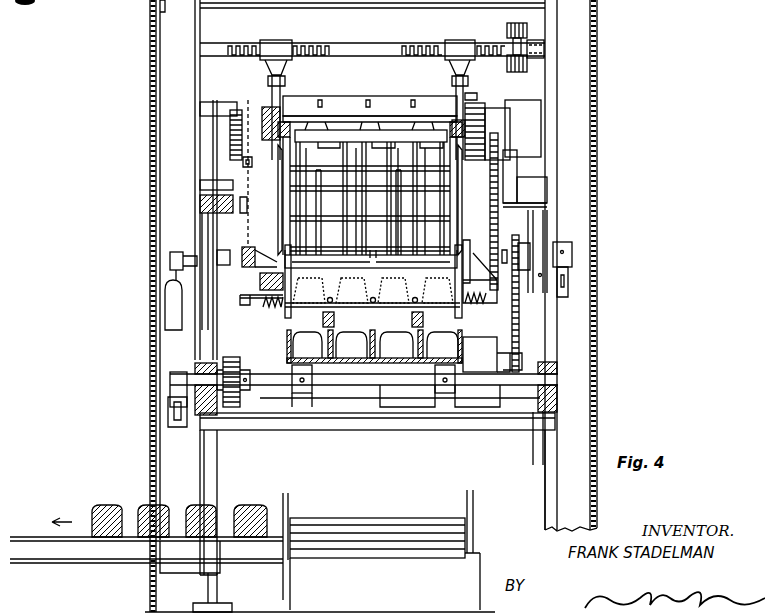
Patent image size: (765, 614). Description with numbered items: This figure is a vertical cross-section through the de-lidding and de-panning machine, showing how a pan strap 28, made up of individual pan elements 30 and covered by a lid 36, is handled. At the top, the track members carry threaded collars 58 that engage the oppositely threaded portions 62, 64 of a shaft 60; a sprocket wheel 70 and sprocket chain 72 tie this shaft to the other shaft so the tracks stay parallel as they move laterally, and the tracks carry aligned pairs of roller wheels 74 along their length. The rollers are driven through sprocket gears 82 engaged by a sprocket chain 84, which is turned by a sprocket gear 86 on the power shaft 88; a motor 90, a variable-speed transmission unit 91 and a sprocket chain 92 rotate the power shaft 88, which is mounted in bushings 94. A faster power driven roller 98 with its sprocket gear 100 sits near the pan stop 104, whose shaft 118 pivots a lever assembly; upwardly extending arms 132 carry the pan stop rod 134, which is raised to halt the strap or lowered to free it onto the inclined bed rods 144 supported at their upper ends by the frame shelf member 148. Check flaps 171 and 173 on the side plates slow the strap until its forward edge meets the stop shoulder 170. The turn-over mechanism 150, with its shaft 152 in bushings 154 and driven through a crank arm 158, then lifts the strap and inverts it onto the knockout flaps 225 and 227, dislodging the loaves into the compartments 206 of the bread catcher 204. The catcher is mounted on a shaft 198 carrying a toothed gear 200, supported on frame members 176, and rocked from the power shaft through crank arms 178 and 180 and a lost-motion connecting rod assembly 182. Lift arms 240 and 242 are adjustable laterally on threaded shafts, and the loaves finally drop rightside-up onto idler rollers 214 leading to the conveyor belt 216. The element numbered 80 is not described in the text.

The pan strap 28 is at (364, 120).
The pan element 30 is at (436, 297).
The lid 36 is at (349, 82).
The threaded collar 58 is at (458, 45).
The shaft 60 is at (358, 47).
The threaded portion 62 is at (250, 44).
The threaded portion 64 is at (422, 47).
The sprocket wheel 70 is at (521, 66).
The sprocket chain 72 is at (528, 32).
The roller wheel 74 is at (457, 120).
The plate 80 is at (518, 155).
The sprocket gear 82 is at (245, 125).
The sprocket chain 84 is at (247, 226).
The sprocket gear 86 is at (258, 278).
The power shaft 88 is at (470, 278).
The motor 90 is at (406, 398).
The variable-speed transmission unit 91 is at (484, 359).
The sprocket chain 92 is at (520, 323).
The bushing 94 is at (548, 240).
The power driven roller 98 is at (472, 150).
The sprocket gear 100 is at (488, 128).
The pan stop 104 is at (305, 128).
The shaft 118 is at (450, 186).
The arm 132 is at (430, 185).
The pan stop rod 134 is at (393, 128).
The bed rod 144 is at (332, 225).
The frame shelf member 148 is at (215, 170).
The turn-over mechanism 150 is at (448, 250).
The shaft 152 is at (225, 260).
The bushing 154 is at (205, 240).
The crank arm 158 is at (572, 270).
The stop shoulder 170 is at (307, 265).
The check flap 171 is at (290, 210).
The check flap 173 is at (536, 235).
The frame member 176 is at (550, 398).
The crank arm 178 is at (205, 390).
The crank arm 180 is at (172, 268).
The connecting rod assembly 182 is at (200, 323).
The shaft 198 is at (516, 383).
The toothed gear 200 is at (257, 362).
The bread catcher 204 is at (355, 378).
The compartment 206 is at (292, 340).
The idler roller 214 is at (352, 520).
The conveyor belt 216 is at (125, 545).
The knockout flap 225 is at (287, 314).
The knockout flap 227 is at (505, 335).
The lift arm 240 is at (323, 320).
The lift arm 242 is at (424, 320).